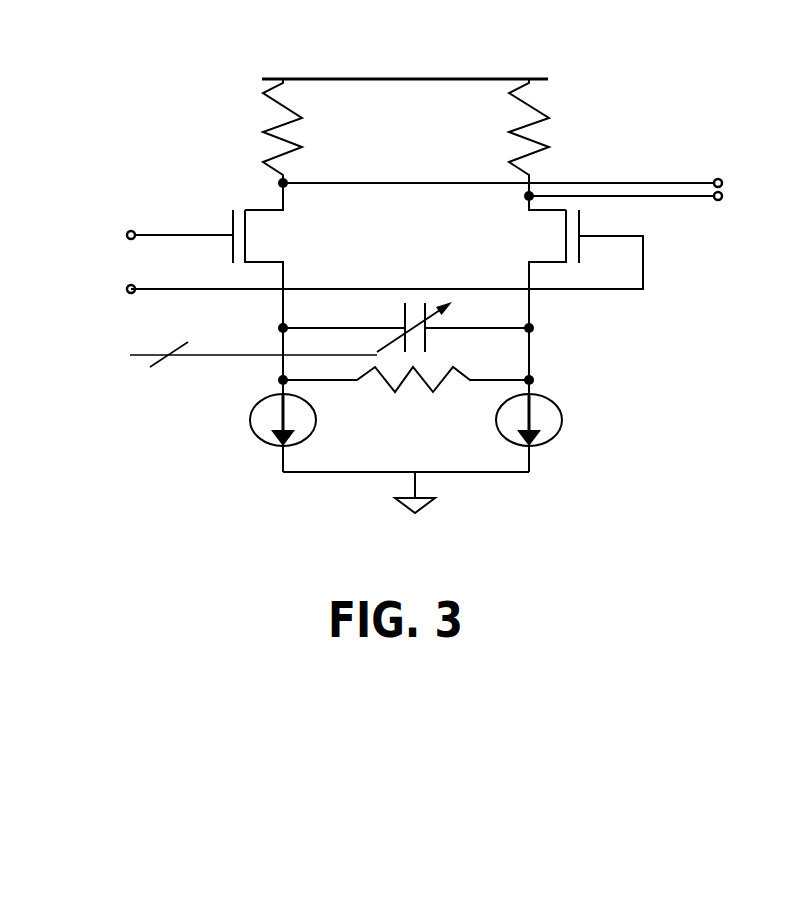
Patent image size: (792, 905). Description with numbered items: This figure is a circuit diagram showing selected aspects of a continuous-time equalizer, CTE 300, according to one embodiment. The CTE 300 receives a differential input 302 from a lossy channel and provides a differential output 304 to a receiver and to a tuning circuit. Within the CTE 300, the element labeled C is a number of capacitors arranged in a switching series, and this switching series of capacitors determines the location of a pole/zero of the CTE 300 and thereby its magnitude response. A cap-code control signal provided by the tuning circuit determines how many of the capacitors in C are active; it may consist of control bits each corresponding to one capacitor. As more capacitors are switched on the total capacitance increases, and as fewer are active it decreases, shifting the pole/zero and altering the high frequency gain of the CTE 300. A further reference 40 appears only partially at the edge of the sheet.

The continuous-time equalizer 300 is at (279, 576).
The differential input 302 is at (111, 186).
The differential output 304 is at (683, 100).
The partially visible reference 40 is at (780, 344).